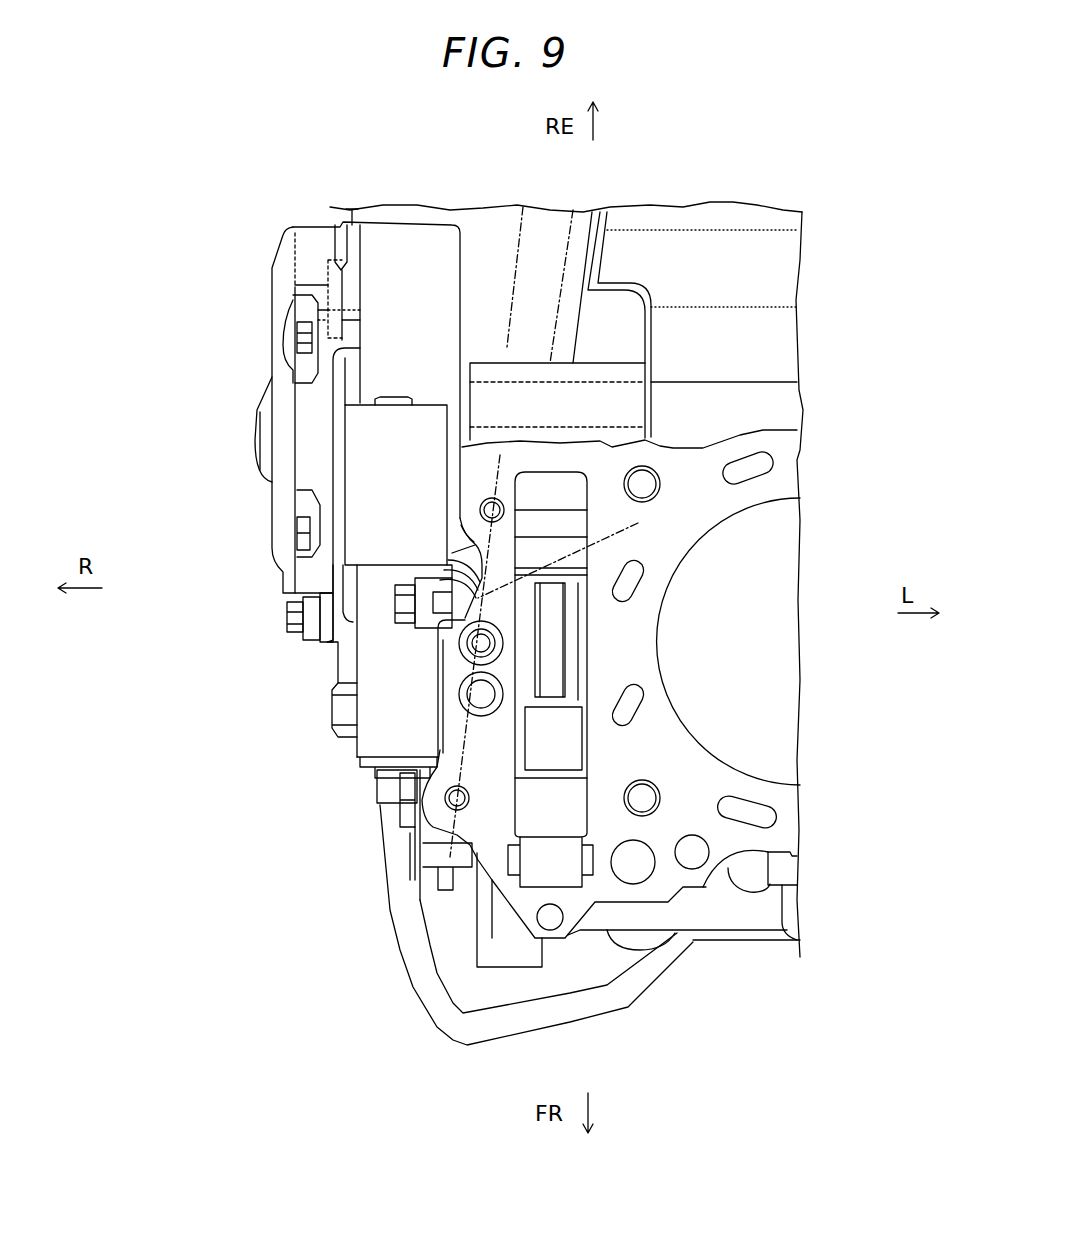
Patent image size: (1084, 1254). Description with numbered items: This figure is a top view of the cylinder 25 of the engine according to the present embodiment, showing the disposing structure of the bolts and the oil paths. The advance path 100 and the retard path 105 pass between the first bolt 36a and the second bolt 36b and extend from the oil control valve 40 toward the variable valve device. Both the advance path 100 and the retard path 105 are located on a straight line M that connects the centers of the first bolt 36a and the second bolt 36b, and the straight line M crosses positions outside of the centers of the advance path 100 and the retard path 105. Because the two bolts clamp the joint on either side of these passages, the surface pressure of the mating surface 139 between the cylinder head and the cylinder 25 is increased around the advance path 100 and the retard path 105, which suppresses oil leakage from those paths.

The first bolt 36a is at (480, 508).
The second bolt 36b is at (447, 797).
The oil control valve 40 is at (375, 527).
The retard path 105 is at (450, 629).
The advance path 100 is at (470, 684).
The cylinder 25 is at (447, 738).
The mating surface 139 is at (500, 757).
The straight line M is at (571, 555).